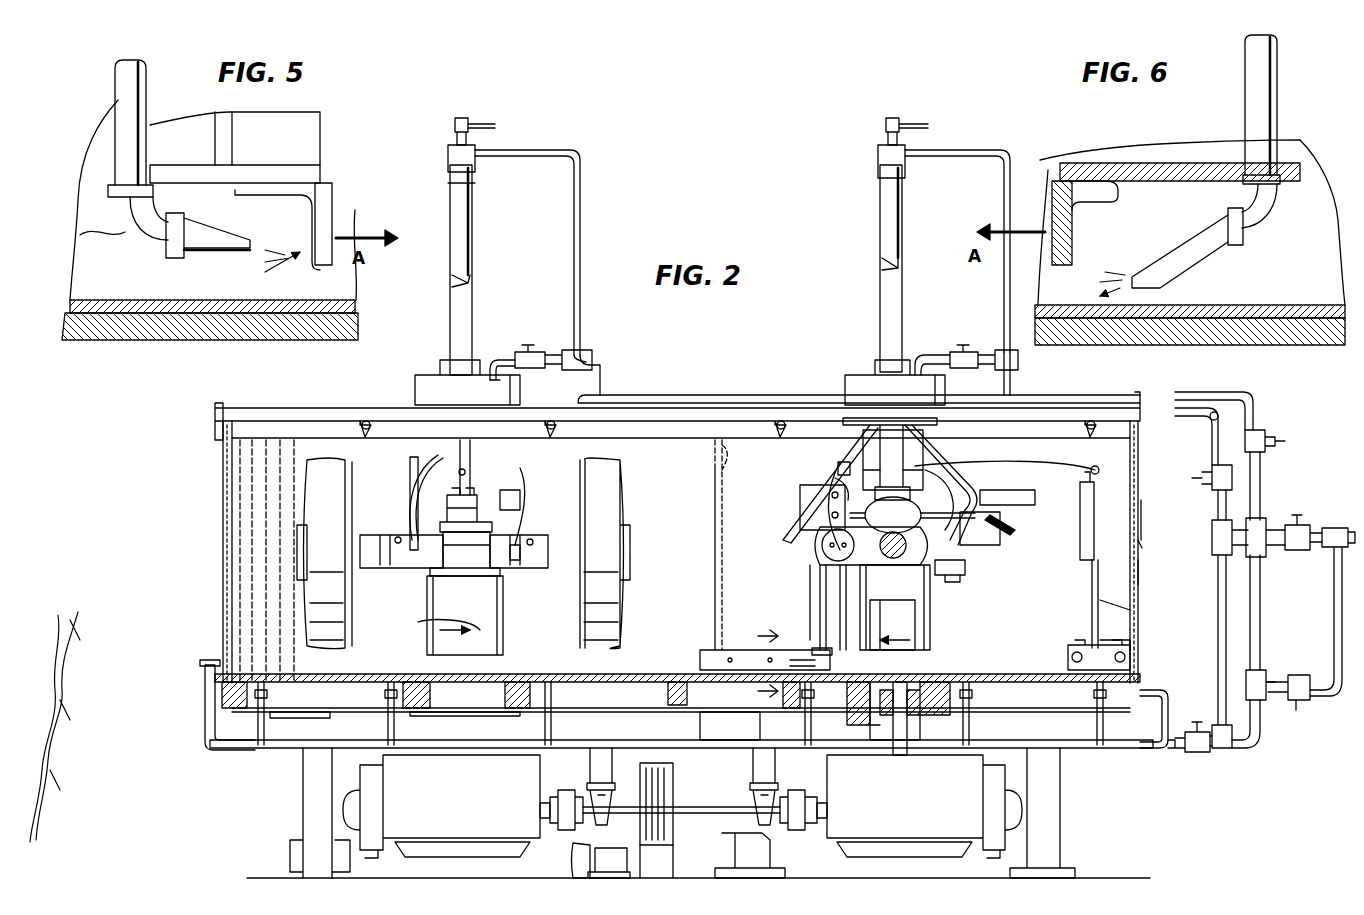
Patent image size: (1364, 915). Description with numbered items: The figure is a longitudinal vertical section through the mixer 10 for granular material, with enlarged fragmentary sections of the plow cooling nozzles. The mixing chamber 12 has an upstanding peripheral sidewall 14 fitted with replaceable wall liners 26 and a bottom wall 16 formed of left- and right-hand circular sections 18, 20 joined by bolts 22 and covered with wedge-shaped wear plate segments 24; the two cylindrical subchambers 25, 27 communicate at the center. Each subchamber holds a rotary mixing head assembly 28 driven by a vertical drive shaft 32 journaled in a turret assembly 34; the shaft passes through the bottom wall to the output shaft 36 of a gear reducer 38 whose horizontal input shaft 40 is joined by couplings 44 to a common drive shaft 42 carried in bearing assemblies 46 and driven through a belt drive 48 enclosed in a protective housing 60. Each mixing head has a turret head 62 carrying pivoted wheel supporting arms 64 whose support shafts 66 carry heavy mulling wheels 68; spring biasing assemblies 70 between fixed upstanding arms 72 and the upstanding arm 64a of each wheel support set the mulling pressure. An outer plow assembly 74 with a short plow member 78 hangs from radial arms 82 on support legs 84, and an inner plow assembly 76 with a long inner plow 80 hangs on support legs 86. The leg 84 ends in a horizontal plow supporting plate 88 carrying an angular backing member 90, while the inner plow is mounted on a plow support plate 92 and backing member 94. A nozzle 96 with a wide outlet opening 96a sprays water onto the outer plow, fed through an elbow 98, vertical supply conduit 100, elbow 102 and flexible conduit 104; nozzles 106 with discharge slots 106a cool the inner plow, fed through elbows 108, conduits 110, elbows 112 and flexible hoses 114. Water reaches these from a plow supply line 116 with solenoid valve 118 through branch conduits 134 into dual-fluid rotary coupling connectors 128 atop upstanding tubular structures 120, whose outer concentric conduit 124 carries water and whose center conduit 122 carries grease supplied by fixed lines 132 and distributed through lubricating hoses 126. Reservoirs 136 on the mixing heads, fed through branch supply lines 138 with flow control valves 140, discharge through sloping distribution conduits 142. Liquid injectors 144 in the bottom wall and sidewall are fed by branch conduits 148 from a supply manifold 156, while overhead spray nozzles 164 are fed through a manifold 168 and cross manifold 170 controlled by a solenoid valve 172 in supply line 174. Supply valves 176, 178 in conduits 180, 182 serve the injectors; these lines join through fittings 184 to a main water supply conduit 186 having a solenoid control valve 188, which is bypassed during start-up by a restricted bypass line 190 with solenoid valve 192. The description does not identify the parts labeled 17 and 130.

In FIG. 2, the mixer 10 is at (722, 898).
In FIG. 2, the mixing chamber 12 is at (1140, 572).
In FIG. 2, the peripheral sidewall 14 is at (215, 550).
In FIG. 5, the bottom wall 16 is at (105, 343).
In FIG. 6, the bottom wall 16 is at (1188, 340).
In FIG. 2, the bottom wall 16 is at (280, 684).
In FIG. 2, the support legs 17 is at (303, 788).
In FIG. 2, the left-hand circular section 18 is at (618, 698).
In FIG. 2, the right-hand circular section 20 is at (725, 712).
In FIG. 2, the bolts 22 is at (688, 705).
In FIG. 5, the wear plate segments 24 is at (85, 290).
In FIG. 6, the wear plate segments 24 is at (1205, 305).
In FIG. 2, the wear plate segments 24 is at (340, 675).
In FIG. 2, the left-hand subchamber 25 is at (215, 598).
In FIG. 2, the wall liners 26 is at (220, 512).
In FIG. 2, the right-hand subchamber 27 is at (1142, 545).
In FIG. 2, the rotary mixing head assembly 28 is at (425, 600).
In FIG. 2, the drive shaft 32 is at (870, 762).
In FIG. 2, the turret assembly 34 is at (490, 635).
In FIG. 2, the output shaft 36 is at (908, 765).
In FIG. 2, the gear reducer 38 is at (682, 806).
In FIG. 2, the input shaft 40 is at (577, 840).
In FIG. 2, the common drive shaft 42 is at (685, 802).
In FIG. 2, the couplings 44 is at (565, 818).
In FIG. 2, the bearing assemblies 46 is at (592, 782).
In FIG. 2, the belt drive 48 is at (658, 848).
In FIG. 2, the protective housing 60 is at (680, 830).
In FIG. 2, the turret head 62 is at (983, 584).
In FIG. 2, the wheel supporting arms 64 is at (368, 560).
In FIG. 2, the upstanding arm 64a is at (830, 552).
In FIG. 2, the mulling wheel support shaft 66 is at (398, 540).
In FIG. 2, the mulling wheel 68 is at (463, 553).
In FIG. 2, the spring biasing assemblies 70 is at (518, 500).
In FIG. 2, the fixed upstanding arms 72 is at (412, 492).
In FIG. 2, the outer plow assembly 74 is at (1140, 618).
In FIG. 2, the inner plow assembly 76 is at (808, 635).
In FIG. 5, the plow member 78 is at (330, 192).
In FIG. 2, the plow member 78 is at (1099, 655).
In FIG. 2, the inner plow 80 is at (1010, 275).
In FIG. 2, the radial arms 82 is at (470, 500).
In FIG. 5, the support legs 84 is at (290, 130).
In FIG. 2, the support legs 84 is at (1092, 606).
In FIG. 2, the support legs 86 is at (830, 640).
In FIG. 5, the plow supporting plate 88 is at (170, 140).
In FIG. 2, the plow supporting plate 88 is at (1135, 648).
In FIG. 5, the backing members 90 is at (240, 195).
In FIG. 6, the plow support plate 92 is at (1160, 163).
In FIG. 2, the plow support plate 92 is at (720, 650).
In FIG. 6, the plow backing member 94 is at (1115, 186).
In FIG. 5, the liquid supply nozzle 96 is at (205, 250).
In FIG. 5, the outlet opening 96a is at (250, 250).
In FIG. 5, the elbow 98 is at (100, 235).
In FIG. 5, the vertical supply conduit 100 is at (108, 98).
In FIG. 2, the vertical supply conduit 100 is at (1092, 486).
In FIG. 2, the elbow 102 is at (1120, 455).
In FIG. 2, the flexible conduit 104 is at (462, 468).
In FIG. 6, the nozzles 106 is at (1222, 248).
In FIG. 2, the nozzles 106 is at (815, 665).
In FIG. 6, the discharge slot 106a is at (1135, 290).
In FIG. 6, the elbows 108 is at (1272, 218).
In FIG. 6, the conduits 110 is at (1272, 95).
In FIG. 2, the conduits 110 is at (835, 568).
In FIG. 2, the elbows 112 is at (835, 485).
In FIG. 2, the flexible hoses 114 is at (838, 468).
In FIG. 2, the plow supply line 116 is at (628, 402).
In FIG. 2, the solenoid control valve 118 is at (1255, 438).
In FIG. 2, the upstanding tubular structure 120 is at (480, 270).
In FIG. 2, the center fluid conduit 122 is at (470, 280).
In FIG. 2, the outer concentric conduit 124 is at (470, 218).
In FIG. 2, the lubricating hoses 126 is at (435, 460).
In FIG. 2, the rotary slip joint coupling connectors 128 is at (455, 153).
In FIG. 2, the fitting 130 is at (460, 120).
In FIG. 2, the fixed lines 132 is at (492, 130).
In FIG. 2, the branch conduits 134 is at (580, 182).
In FIG. 2, the reservoirs 136 is at (418, 390).
In FIG. 2, the branch supply lines 138 is at (552, 355).
In FIG. 2, the flow control valves 140 is at (525, 345).
In FIG. 2, the distribution conduits 142 is at (812, 520).
In FIG. 2, the liquid injectors 144 is at (1163, 676).
In FIG. 2, the supply branch conduits 148 is at (205, 715).
In FIG. 2, the supply manifold 156 is at (1082, 745).
In FIG. 2, the overhead spray nozzles 164 is at (358, 432).
In FIG. 2, the manifold 168 is at (565, 408).
In FIG. 2, the cross manifold 170 is at (1215, 420).
In FIG. 2, the solenoid valve 172 is at (1210, 472).
In FIG. 2, the supply line 174 is at (1218, 515).
In FIG. 2, the water supply valve 176 is at (1208, 755).
In FIG. 2, the water supply valve 178 is at (1198, 775).
In FIG. 2, the supply conduit 180 is at (1215, 642).
In FIG. 2, the supply conduit 182 is at (1265, 618).
In FIG. 2, the fittings 184 is at (1240, 560).
In FIG. 2, the main water supply conduit 186 is at (1333, 525).
In FIG. 2, the solenoid control valve 188 is at (1290, 522).
In FIG. 2, the bypass line 190 is at (1322, 705).
In FIG. 2, the solenoid control valve 192 is at (1298, 710).